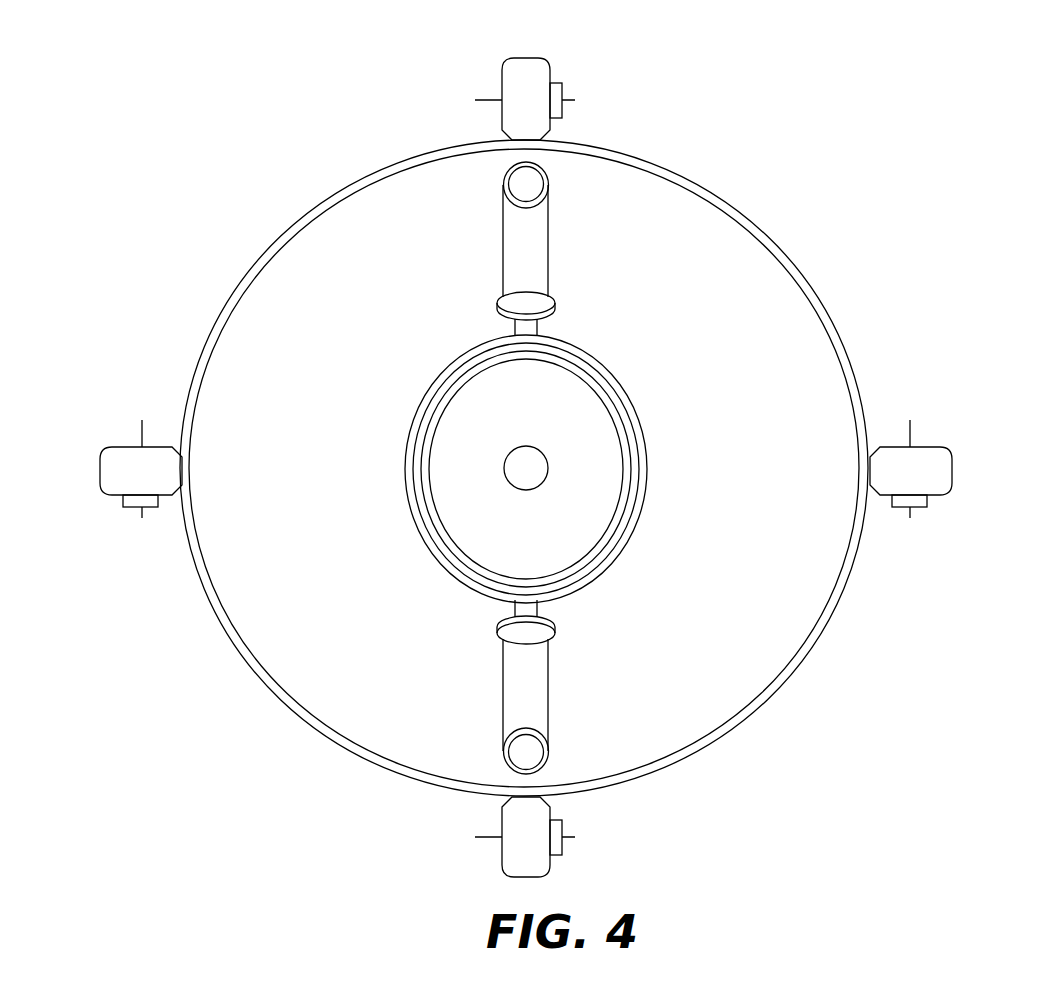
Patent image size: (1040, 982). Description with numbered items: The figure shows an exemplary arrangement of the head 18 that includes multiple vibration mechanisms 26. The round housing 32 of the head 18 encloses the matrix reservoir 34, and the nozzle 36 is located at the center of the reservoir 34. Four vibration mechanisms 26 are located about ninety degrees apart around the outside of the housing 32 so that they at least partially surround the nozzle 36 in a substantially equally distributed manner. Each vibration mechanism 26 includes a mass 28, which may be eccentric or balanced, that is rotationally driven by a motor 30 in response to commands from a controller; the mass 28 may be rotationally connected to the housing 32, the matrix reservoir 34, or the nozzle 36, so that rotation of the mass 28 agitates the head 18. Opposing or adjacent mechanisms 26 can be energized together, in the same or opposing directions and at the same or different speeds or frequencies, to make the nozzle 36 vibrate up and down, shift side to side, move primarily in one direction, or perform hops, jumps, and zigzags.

The head 18 is at (572, 468).
The vibration mechanism 26 is at (528, 457).
The mass 28 is at (516, 110).
The motor 30 is at (557, 107).
The housing 32 is at (830, 624).
The matrix reservoir 34 is at (608, 548).
The nozzle 36 is at (534, 447).